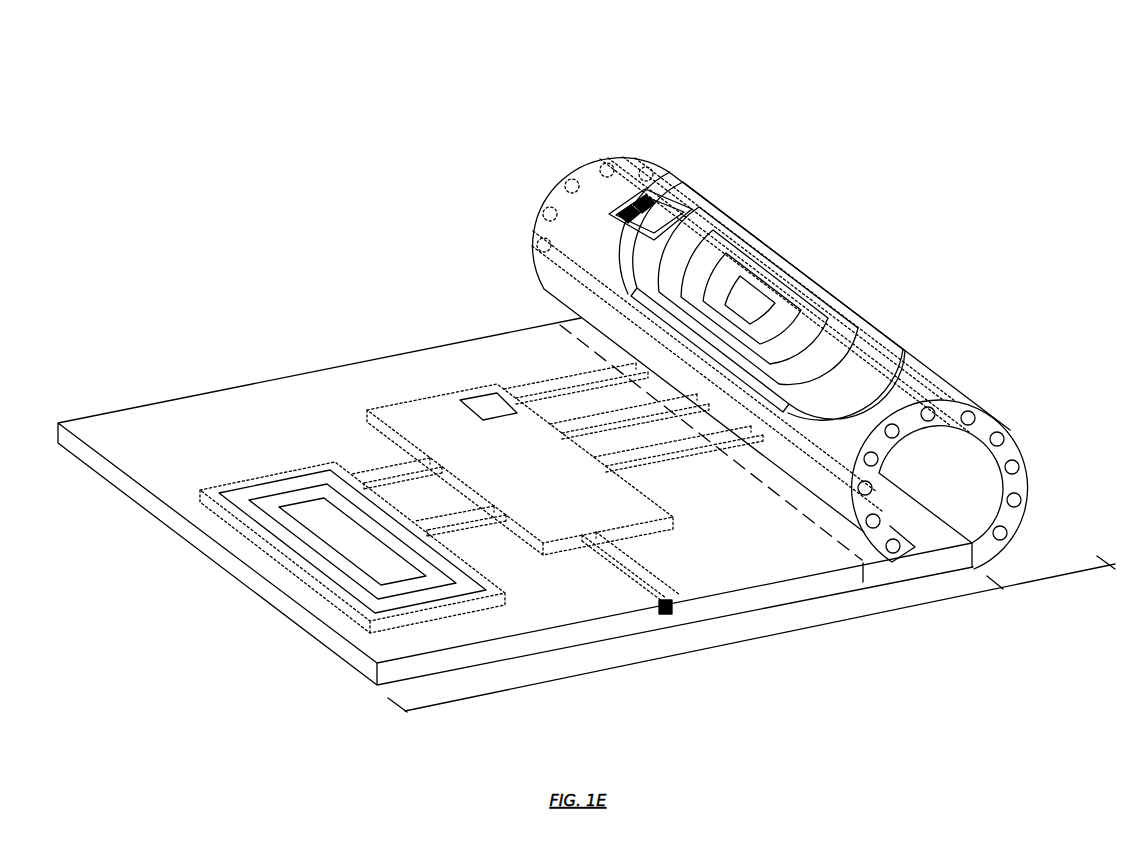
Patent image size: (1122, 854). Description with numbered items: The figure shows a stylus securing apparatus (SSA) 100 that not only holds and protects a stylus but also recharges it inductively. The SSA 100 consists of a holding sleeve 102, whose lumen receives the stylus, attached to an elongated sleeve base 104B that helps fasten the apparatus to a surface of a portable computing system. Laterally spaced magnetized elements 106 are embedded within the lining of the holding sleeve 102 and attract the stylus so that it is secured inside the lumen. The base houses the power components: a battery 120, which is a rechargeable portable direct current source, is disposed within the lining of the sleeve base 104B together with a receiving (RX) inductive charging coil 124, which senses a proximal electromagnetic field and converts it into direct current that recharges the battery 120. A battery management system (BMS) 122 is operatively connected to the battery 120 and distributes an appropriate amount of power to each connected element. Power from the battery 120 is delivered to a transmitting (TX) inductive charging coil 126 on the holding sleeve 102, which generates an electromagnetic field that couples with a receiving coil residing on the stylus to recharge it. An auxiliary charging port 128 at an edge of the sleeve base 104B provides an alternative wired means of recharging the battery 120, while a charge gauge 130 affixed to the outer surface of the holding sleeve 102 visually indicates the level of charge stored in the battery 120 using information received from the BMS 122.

The stylus securing apparatus (SSA) 100 is at (243, 188).
The holding sleeve 102 is at (817, 351).
The elongated sleeve base 104B is at (586, 516).
The magnetized elements 106 is at (907, 383).
The battery 120 is at (383, 402).
The battery management system (BMS) 122 is at (476, 396).
The receiving (RX) inductive charging coil 124 is at (292, 567).
The transmitting (TX) inductive charging coil 126 is at (798, 254).
The auxiliary charging port 128 is at (668, 603).
The charge gauge 130 is at (684, 177).